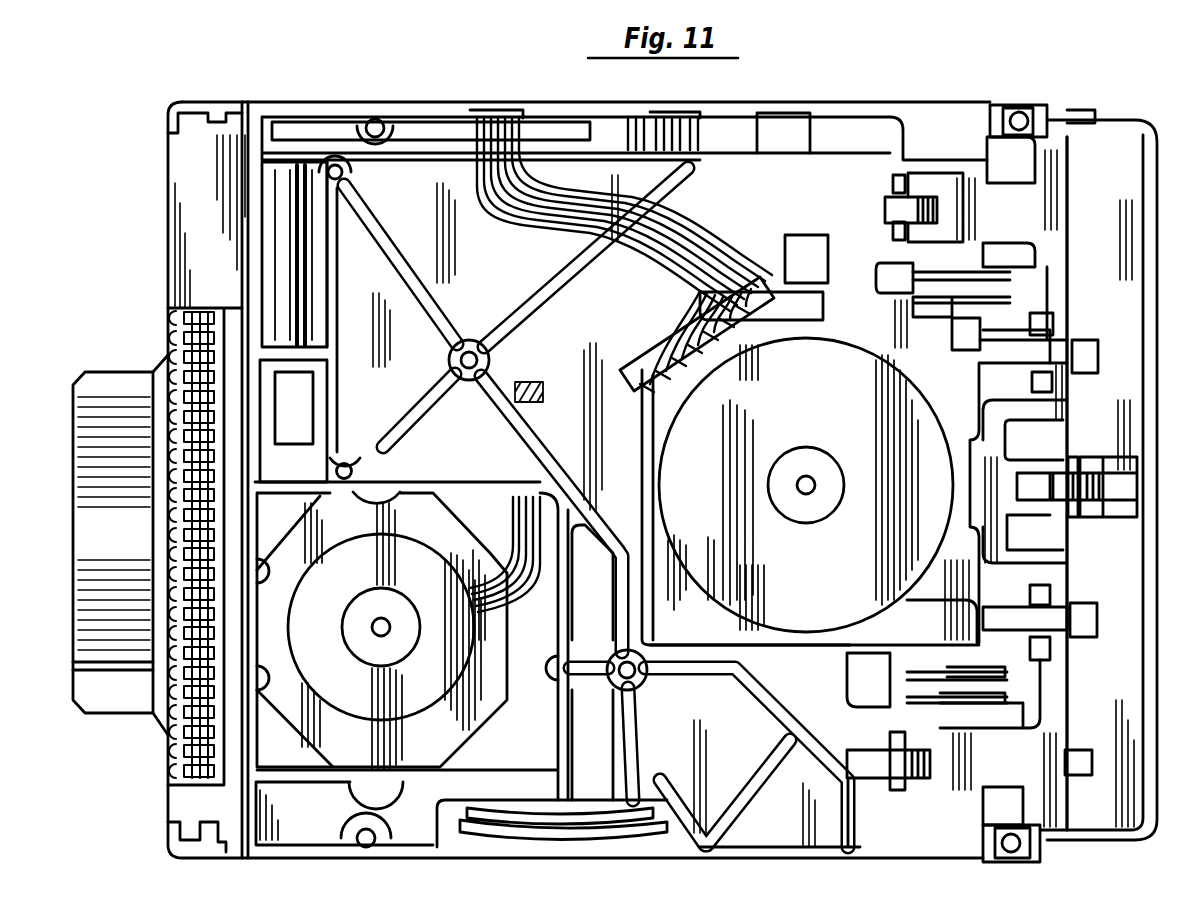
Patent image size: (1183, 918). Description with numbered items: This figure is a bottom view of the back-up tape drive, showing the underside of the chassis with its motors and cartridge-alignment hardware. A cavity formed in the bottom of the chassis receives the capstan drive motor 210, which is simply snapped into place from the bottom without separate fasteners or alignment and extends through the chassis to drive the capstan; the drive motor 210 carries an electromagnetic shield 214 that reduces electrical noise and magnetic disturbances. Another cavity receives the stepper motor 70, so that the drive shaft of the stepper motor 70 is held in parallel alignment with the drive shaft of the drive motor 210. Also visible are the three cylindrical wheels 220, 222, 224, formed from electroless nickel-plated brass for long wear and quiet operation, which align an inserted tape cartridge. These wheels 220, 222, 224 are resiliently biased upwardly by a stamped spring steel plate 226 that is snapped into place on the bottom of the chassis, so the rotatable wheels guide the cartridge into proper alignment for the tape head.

The stepper motor 70 is at (428, 587).
The capstan drive motor 210 is at (835, 415).
The electromagnetic shield 214 is at (773, 640).
The cylindrical wheel 220 is at (893, 760).
The cylindrical wheel 222 is at (1058, 483).
The cylindrical wheel 224 is at (890, 208).
The stamped steel plate 226 is at (1060, 292).